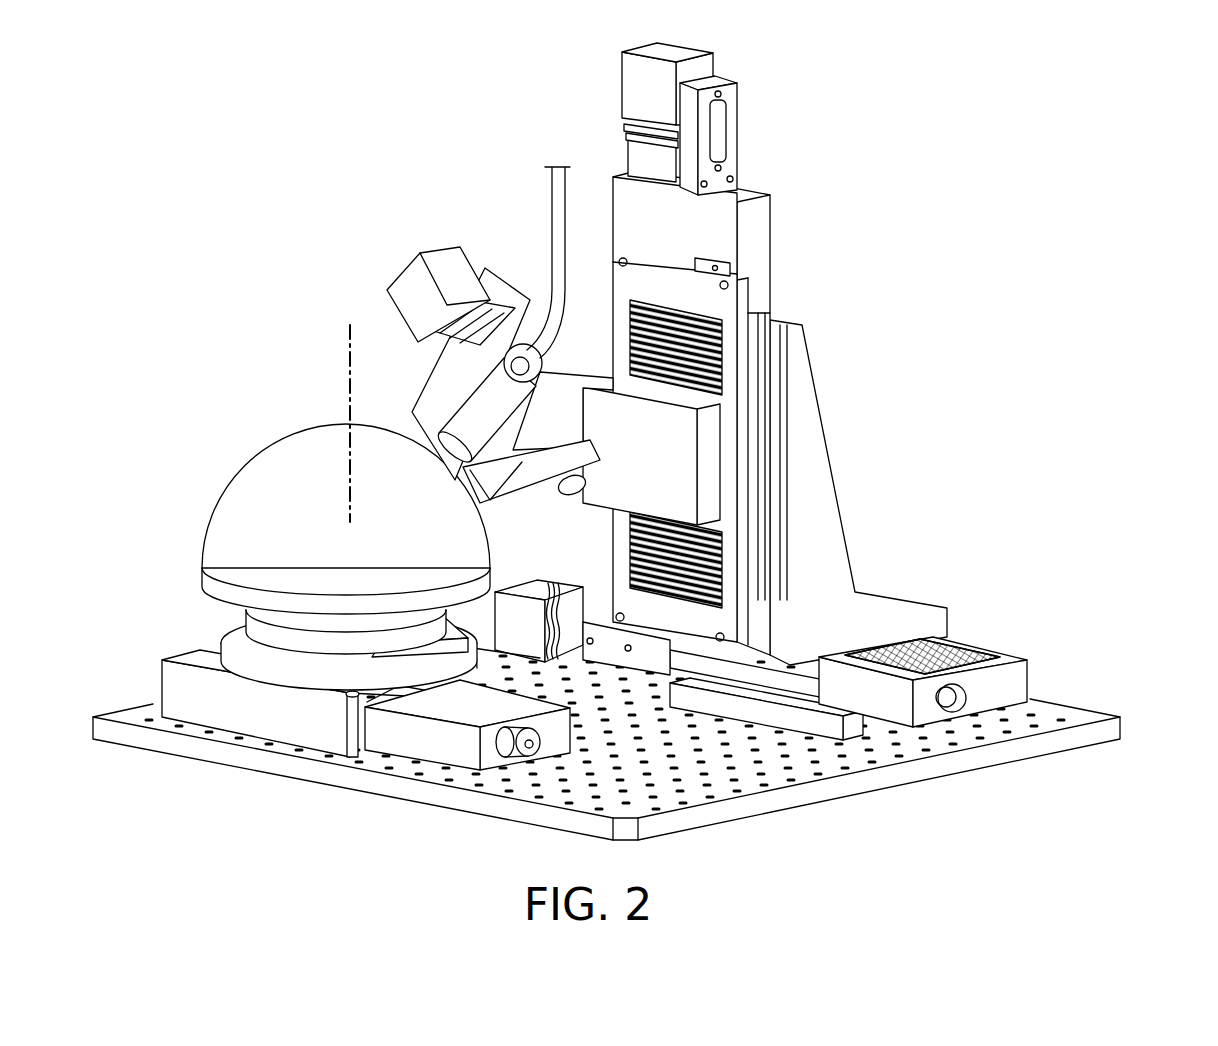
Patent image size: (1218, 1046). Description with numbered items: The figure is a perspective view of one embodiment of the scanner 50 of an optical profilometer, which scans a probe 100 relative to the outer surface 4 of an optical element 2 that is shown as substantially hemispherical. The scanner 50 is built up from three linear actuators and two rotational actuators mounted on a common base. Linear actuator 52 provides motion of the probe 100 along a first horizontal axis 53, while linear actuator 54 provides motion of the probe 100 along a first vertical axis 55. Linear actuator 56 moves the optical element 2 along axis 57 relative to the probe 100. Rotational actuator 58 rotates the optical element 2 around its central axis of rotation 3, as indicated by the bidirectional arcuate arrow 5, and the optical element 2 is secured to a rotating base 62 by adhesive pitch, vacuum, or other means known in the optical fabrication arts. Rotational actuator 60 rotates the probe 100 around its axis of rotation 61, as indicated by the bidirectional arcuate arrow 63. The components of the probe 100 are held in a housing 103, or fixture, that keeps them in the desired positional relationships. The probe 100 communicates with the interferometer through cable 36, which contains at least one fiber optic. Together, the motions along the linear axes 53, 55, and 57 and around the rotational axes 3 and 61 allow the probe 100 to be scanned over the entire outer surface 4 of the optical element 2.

The optical element 2 is at (290, 519).
The central axis of rotation 3 is at (345, 385).
The surface 4 is at (268, 447).
The bidirectional arcuate arrow 5 is at (290, 582).
The cable 36 is at (552, 220).
The scanner 50 is at (1150, 67).
The linear actuator 52 is at (960, 645).
The first horizontal axis 53 is at (812, 615).
The linear actuator 54 is at (758, 288).
The first vertical axis 55 is at (659, 495).
The linear actuator 56 is at (258, 630).
The axis 57 is at (332, 647).
The rotational actuator 58 is at (244, 618).
The rotational actuator 60 is at (452, 268).
The axis of rotation 61 is at (428, 477).
The rotating base 62 is at (203, 582).
The bidirectional arcuate arrow 63 is at (402, 447).
The probe 100 is at (458, 420).
The housing 103 is at (512, 417).